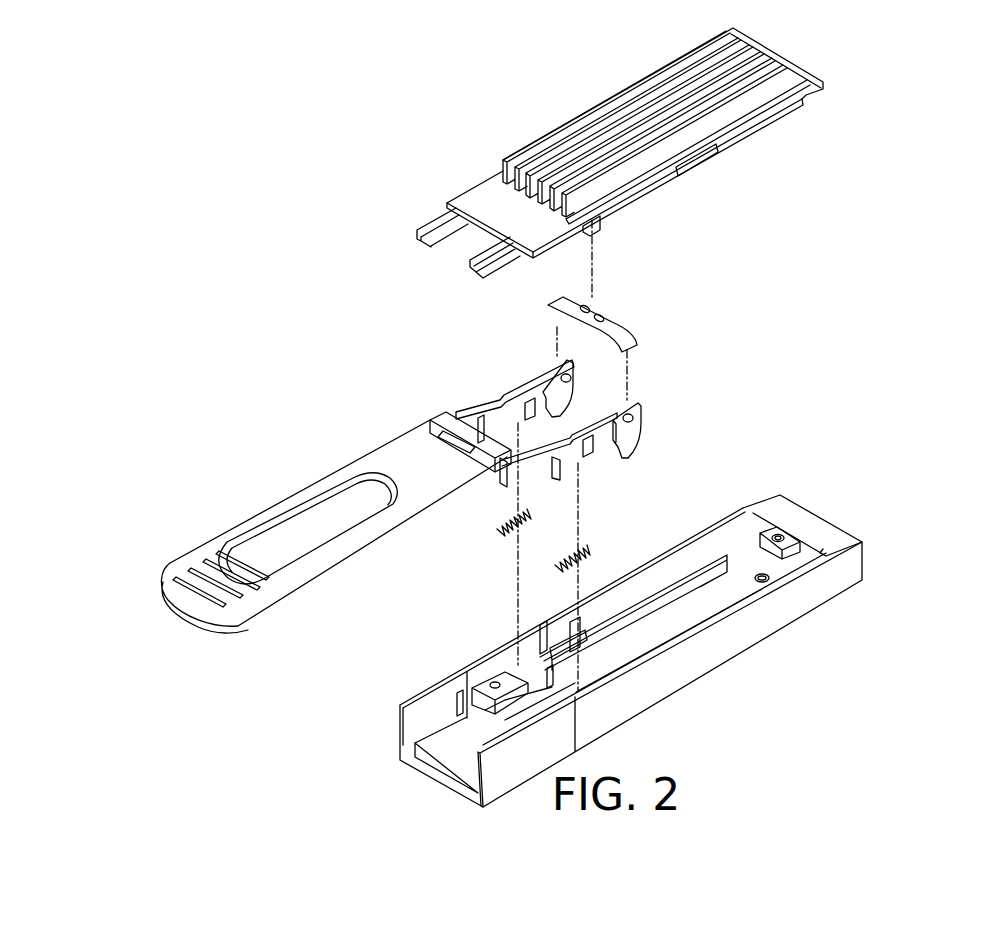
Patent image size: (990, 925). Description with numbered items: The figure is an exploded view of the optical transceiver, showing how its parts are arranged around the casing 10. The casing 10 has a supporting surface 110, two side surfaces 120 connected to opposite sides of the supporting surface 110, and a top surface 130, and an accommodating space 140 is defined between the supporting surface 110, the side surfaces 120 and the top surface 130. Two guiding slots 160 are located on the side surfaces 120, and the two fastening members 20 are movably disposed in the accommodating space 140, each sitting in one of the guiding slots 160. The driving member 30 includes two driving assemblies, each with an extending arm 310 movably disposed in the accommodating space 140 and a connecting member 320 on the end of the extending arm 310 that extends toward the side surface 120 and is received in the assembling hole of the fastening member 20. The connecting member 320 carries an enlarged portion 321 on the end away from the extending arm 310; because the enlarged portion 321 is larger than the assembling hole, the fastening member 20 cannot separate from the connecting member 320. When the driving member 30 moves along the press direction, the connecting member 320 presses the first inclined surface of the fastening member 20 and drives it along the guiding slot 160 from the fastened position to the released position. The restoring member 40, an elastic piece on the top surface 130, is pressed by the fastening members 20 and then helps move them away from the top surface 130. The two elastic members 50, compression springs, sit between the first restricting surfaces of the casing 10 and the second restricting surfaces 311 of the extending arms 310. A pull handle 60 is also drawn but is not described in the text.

The casing 10 is at (827, 103).
The fastening member 20 is at (620, 410).
The driving member 30 is at (510, 387).
The restoring member 40 is at (600, 315).
The elastic member 50 is at (557, 568).
The pull handle 60 is at (207, 550).
The supporting surface 110 is at (667, 617).
The side surface 120 is at (720, 590).
The top surface 130 is at (640, 187).
The accommodating space 140 is at (705, 605).
The guiding slot 160 is at (555, 640).
The extending arm 310 is at (563, 477).
The second restricting surface 311 is at (593, 460).
The connecting member 320 is at (575, 378).
The enlarged portion 321 is at (641, 418).